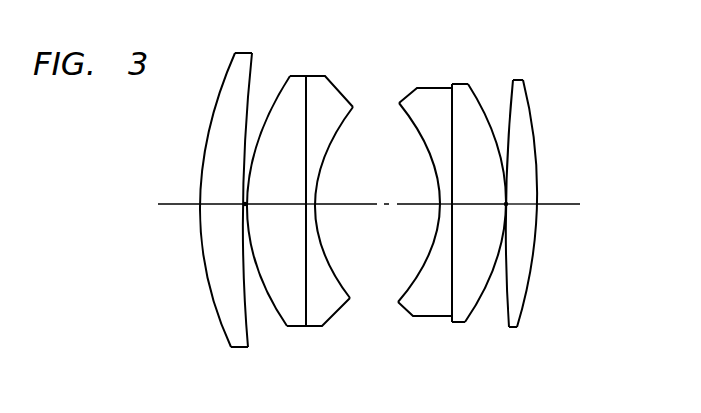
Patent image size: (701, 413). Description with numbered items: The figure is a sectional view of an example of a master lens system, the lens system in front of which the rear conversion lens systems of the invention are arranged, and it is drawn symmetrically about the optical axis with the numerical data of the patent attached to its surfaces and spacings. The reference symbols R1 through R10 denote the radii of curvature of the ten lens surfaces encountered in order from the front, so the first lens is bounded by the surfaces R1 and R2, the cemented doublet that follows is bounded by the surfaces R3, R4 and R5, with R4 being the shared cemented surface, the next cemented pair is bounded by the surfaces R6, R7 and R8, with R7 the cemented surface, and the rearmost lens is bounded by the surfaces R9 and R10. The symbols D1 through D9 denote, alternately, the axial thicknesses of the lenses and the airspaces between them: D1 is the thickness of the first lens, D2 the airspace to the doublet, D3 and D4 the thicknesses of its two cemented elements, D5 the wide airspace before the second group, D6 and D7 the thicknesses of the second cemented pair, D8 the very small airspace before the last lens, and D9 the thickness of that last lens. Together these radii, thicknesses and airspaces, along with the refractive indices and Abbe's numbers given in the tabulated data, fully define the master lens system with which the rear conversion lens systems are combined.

The radius of curvature of first lens surface R1 is at (216, 306).
The radius of curvature of second lens surface R2 is at (246, 326).
The radius of curvature of third lens surface R3 is at (273, 306).
The radius of curvature of fourth lens surface R4 is at (307, 306).
The radius of curvature of fifth lens surface R5 is at (335, 288).
The radius of curvature of sixth lens surface R6 is at (413, 289).
The radius of curvature of seventh lens surface R7 is at (447, 304).
The radius of curvature of eighth lens surface R8 is at (482, 301).
The radius of curvature of ninth lens surface R9 is at (507, 304).
The radius of curvature of tenth lens surface R10 is at (527, 301).
The lens thickness D1 is at (214, 201).
The airspace D2 is at (243, 205).
The lens thickness D3 is at (270, 201).
The lens thickness D4 is at (306, 205).
The airspace D5 is at (358, 203).
The lens thickness D6 is at (439, 206).
The lens thickness D7 is at (460, 203).
The airspace D8 is at (505, 206).
The lens thickness D9 is at (518, 201).